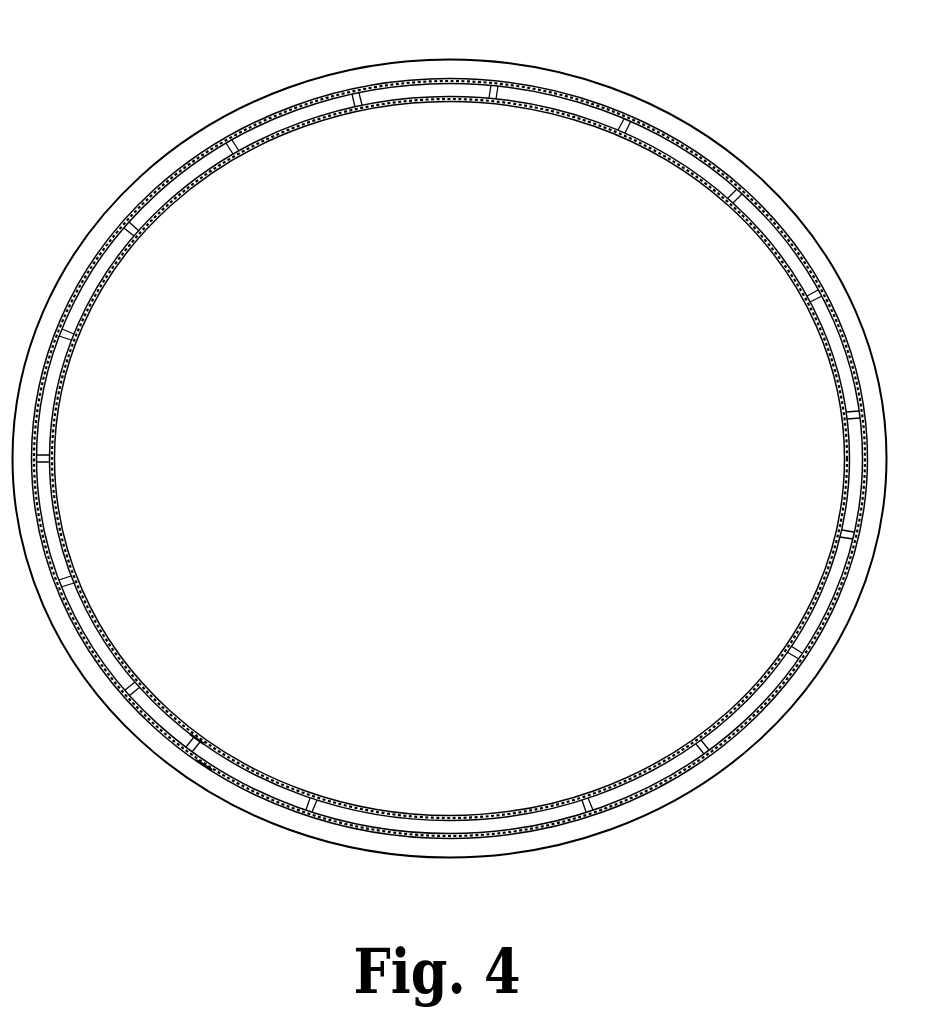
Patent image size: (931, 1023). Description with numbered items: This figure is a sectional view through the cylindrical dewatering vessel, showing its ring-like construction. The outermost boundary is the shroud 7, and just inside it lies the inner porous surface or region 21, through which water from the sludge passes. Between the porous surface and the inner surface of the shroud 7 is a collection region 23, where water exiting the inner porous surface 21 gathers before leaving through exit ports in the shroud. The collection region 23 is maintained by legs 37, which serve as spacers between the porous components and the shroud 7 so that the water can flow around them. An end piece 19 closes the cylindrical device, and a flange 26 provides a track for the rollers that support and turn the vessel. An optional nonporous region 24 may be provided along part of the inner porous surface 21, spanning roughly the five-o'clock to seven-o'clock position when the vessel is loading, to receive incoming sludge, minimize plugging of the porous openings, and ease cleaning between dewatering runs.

The shroud 7 is at (807, 253).
The end piece 19 is at (428, 182).
The inner porous surface or region 21 is at (645, 140).
The collection region 23 is at (832, 348).
The nonporous region 24 is at (623, 770).
The flange 26 is at (132, 184).
The legs 37 is at (685, 776).